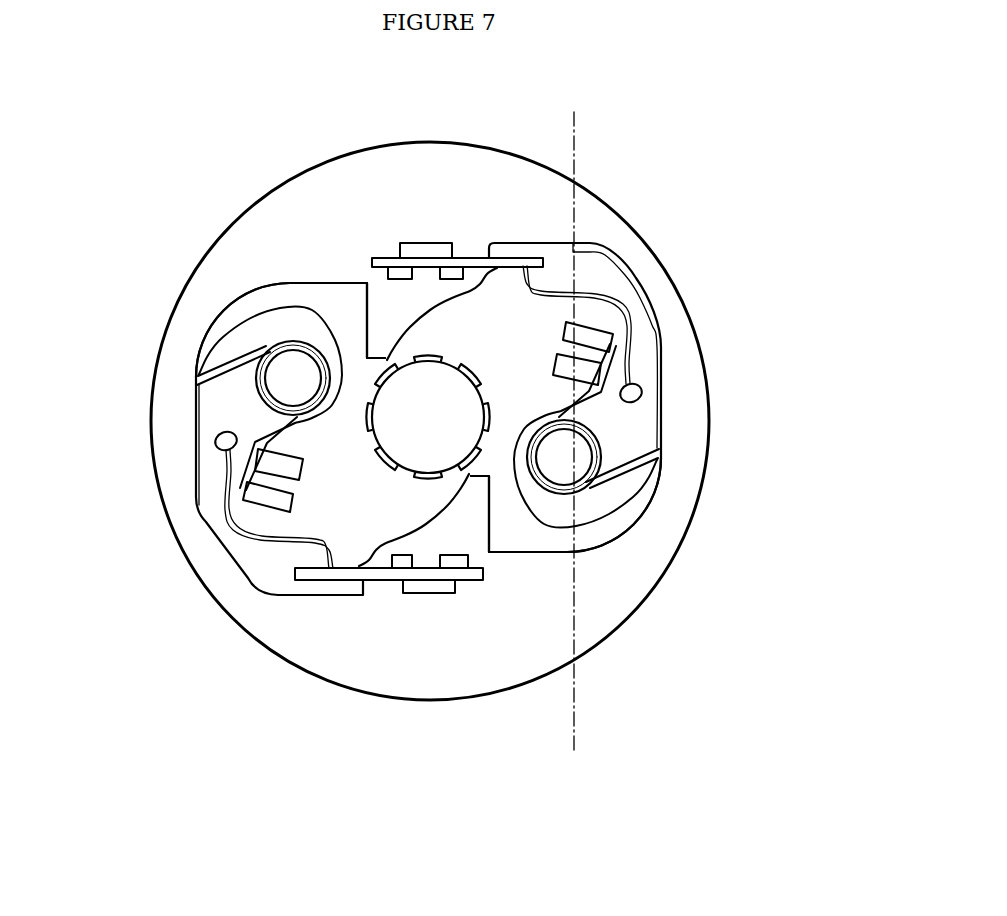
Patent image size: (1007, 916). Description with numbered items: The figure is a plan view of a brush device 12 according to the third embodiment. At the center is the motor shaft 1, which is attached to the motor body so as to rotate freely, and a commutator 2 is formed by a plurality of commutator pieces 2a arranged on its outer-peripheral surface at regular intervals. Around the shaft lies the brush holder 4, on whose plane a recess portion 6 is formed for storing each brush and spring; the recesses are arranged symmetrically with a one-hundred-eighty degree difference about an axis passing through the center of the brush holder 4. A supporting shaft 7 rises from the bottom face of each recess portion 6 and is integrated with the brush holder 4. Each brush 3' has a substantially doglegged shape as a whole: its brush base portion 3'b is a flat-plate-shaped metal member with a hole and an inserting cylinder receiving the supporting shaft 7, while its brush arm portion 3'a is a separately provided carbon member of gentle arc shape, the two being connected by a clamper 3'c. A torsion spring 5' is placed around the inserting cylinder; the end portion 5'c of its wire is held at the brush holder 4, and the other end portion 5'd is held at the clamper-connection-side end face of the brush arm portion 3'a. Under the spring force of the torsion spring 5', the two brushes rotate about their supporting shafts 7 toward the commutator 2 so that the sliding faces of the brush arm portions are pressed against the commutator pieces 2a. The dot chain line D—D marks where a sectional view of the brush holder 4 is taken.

The motor shaft 1 is at (428, 415).
The commutator 2 is at (427, 345).
The commutator pieces 2a is at (428, 478).
The brush 3' is at (404, 438).
The brush arm portion 3'a is at (289, 405).
The brush base portion 3'b is at (438, 518).
The clamper 3'c is at (436, 420).
The brush holder 4 is at (290, 622).
The torsion spring 5' is at (436, 417).
The end portion of wire member 5'c is at (436, 435).
The end portion of wire member 5'd is at (439, 429).
The recess portion 6 is at (358, 525).
The supporting shaft 7 is at (293, 383).
The brush device 12 is at (668, 192).
The dot chain line D— D is at (574, 122).